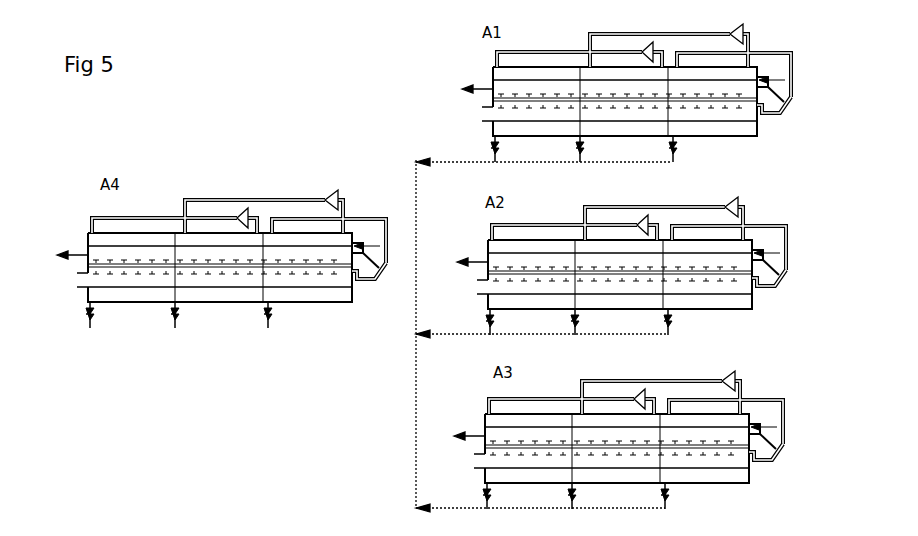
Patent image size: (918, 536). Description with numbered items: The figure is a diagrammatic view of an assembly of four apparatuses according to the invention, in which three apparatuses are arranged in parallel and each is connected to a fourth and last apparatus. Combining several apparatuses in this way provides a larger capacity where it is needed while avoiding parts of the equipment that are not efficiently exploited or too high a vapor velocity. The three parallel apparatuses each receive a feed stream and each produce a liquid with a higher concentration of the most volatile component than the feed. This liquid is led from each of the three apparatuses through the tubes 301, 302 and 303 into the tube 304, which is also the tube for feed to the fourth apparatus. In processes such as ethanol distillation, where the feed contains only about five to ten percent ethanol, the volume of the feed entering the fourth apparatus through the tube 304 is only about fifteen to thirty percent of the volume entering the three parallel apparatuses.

The tube 301 is at (544, 155).
The tube 302 is at (542, 328).
The tube 303 is at (540, 502).
The tube 304 is at (372, 249).